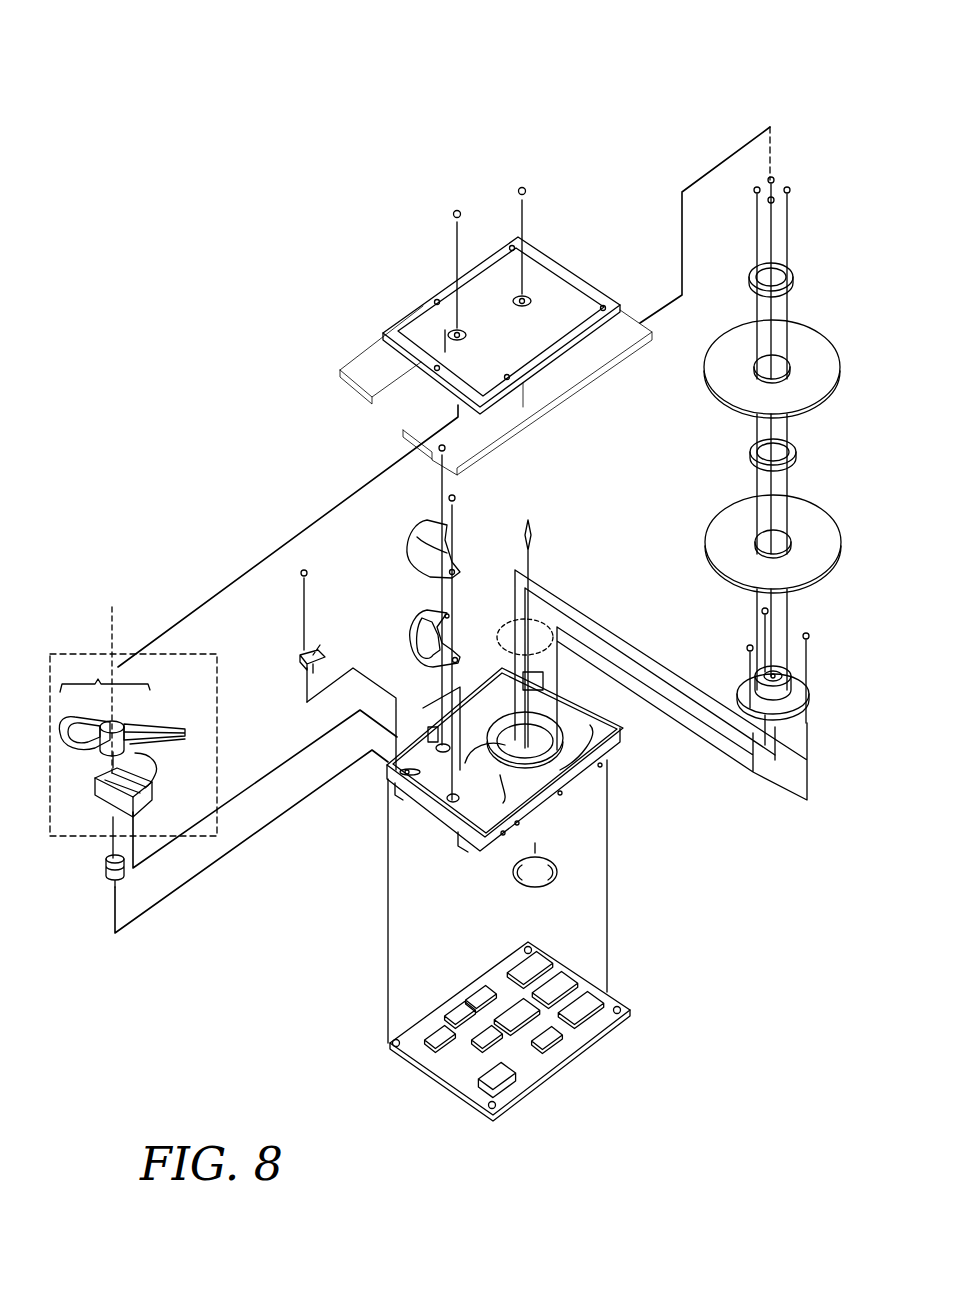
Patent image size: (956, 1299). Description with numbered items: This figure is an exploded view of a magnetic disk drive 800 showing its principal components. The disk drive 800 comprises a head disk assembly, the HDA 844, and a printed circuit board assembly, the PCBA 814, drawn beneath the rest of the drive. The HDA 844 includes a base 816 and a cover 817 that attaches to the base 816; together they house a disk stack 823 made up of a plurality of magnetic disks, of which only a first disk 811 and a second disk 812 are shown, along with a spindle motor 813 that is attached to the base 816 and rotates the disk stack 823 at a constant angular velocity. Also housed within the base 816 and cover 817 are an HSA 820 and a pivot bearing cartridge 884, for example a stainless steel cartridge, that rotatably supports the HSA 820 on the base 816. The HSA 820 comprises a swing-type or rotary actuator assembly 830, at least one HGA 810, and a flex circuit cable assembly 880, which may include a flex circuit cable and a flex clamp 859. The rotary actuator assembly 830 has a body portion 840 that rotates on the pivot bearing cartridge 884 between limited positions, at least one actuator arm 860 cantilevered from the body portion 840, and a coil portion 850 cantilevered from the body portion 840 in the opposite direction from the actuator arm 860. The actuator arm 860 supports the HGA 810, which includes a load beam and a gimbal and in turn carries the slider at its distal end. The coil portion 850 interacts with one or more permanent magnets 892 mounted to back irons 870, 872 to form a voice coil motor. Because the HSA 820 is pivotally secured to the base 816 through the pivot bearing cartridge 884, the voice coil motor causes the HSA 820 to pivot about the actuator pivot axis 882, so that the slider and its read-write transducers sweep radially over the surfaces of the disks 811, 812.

The magnetic disk drive 800 is at (262, 86).
The HGA 810 is at (182, 727).
The first disk 811 is at (715, 518).
The second disk 812 is at (720, 397).
The spindle motor 813 is at (742, 683).
The PCBA 814 is at (553, 1067).
The base 816 is at (613, 765).
The cover 817 is at (407, 318).
The HSA 820 is at (85, 653).
The disk stack 823 is at (663, 512).
The rotary actuator assembly 830 is at (105, 674).
The body portion 840 is at (110, 722).
The HDA 844 is at (705, 933).
The coil portion 850 is at (108, 784).
The flex clamp 859 is at (113, 798).
The actuator arm 860 is at (162, 746).
The back iron 870 is at (432, 545).
The back iron 872 is at (447, 614).
The flex circuit cable assembly 880 is at (160, 798).
The pivot axis 882 is at (114, 616).
The pivot bearing cartridge 884 is at (105, 870).
The permanent magnet 892 is at (423, 628).